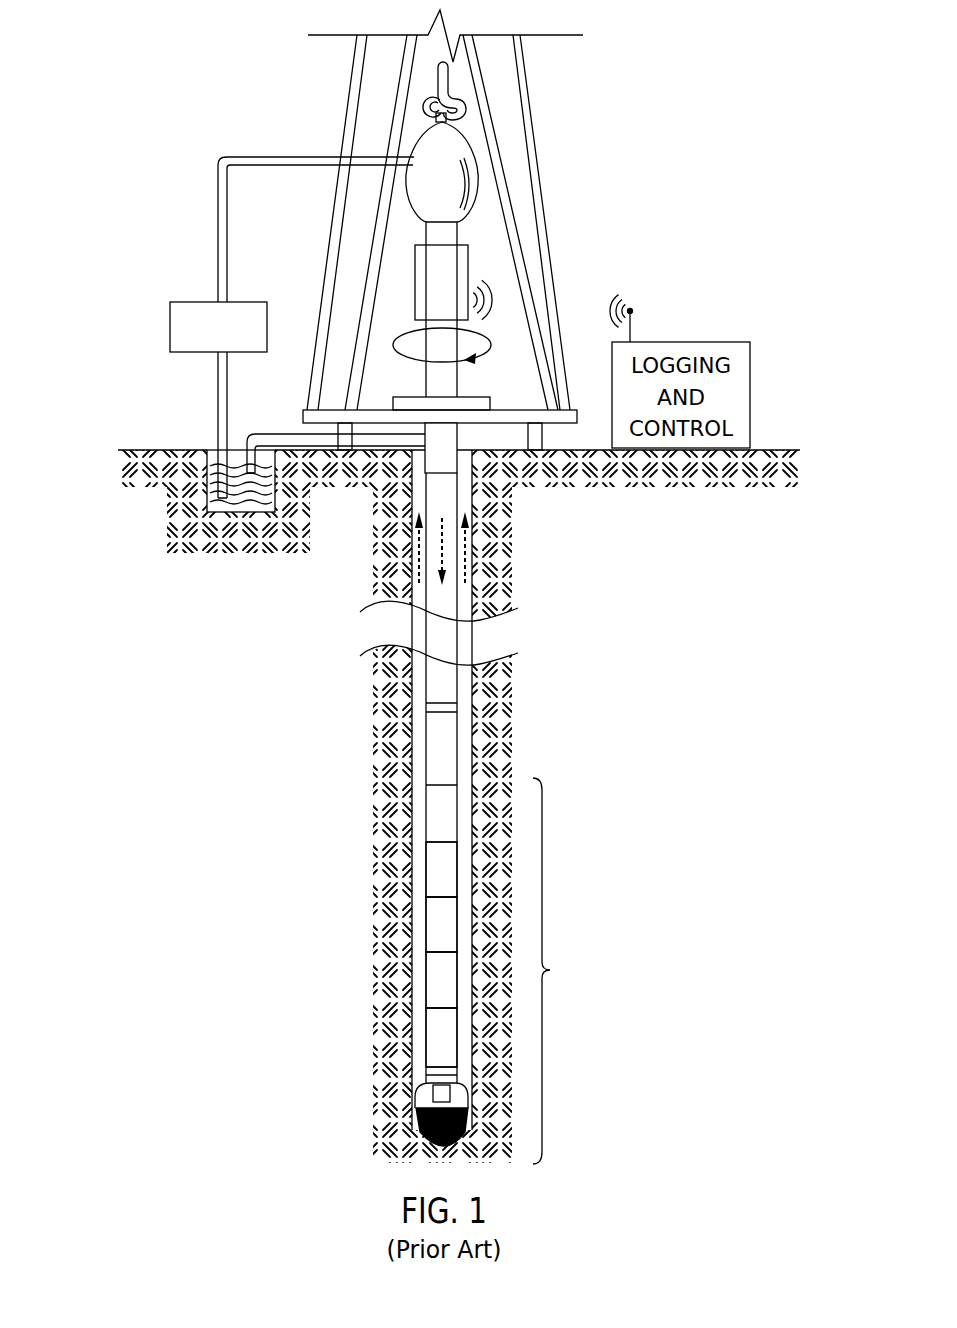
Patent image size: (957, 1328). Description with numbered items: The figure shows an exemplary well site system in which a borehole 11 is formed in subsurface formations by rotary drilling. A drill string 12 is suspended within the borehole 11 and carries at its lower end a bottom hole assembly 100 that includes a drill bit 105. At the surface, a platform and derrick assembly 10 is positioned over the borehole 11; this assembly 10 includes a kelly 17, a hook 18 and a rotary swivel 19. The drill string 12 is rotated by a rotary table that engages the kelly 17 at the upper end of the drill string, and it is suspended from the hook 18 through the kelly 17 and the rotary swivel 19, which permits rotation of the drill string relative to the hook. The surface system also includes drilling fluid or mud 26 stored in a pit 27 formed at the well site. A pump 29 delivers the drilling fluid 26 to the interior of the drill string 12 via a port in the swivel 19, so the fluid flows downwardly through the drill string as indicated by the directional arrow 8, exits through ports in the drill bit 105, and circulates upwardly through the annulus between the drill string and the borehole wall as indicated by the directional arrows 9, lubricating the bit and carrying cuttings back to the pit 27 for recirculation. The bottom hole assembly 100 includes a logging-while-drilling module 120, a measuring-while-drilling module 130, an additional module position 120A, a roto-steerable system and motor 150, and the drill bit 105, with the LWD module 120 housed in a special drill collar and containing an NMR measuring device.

The platform and derrick assembly 10 is at (578, 145).
The hook 18 is at (452, 78).
The rotary swivel 19 is at (425, 196).
The kelly 17 is at (440, 382).
The borehole 11 is at (468, 403).
The drill string 12 is at (440, 435).
The pit 27 is at (212, 443).
The pump 29 is at (190, 352).
The drilling fluid 26 is at (237, 497).
The directional arrows 9 is at (413, 553).
The directional arrow 8 is at (443, 553).
The logging-while-drilling module 120 is at (433, 868).
The measuring-while-drilling module 130 is at (433, 923).
The logging-while-drilling module 120A is at (433, 978).
The roto-steerable system and motor 150 is at (433, 1045).
The drill bit 105 is at (420, 1110).
The bottom hole assembly 100 is at (566, 971).